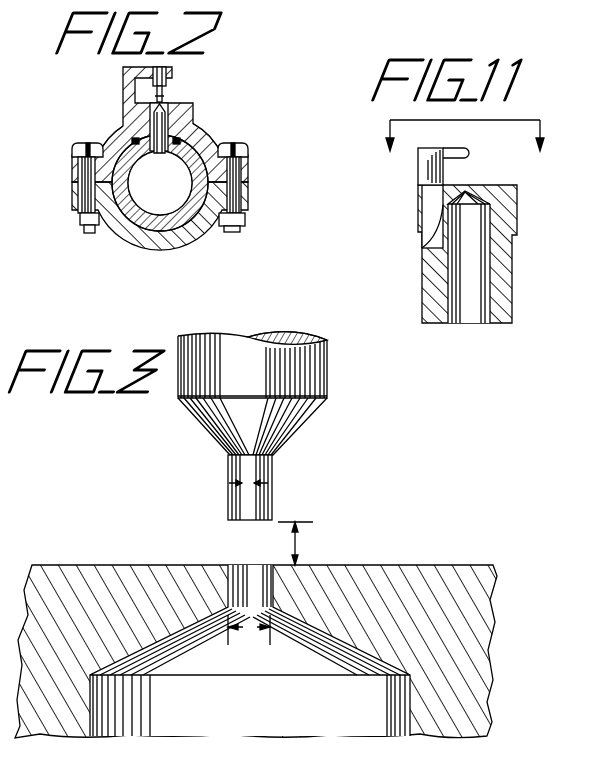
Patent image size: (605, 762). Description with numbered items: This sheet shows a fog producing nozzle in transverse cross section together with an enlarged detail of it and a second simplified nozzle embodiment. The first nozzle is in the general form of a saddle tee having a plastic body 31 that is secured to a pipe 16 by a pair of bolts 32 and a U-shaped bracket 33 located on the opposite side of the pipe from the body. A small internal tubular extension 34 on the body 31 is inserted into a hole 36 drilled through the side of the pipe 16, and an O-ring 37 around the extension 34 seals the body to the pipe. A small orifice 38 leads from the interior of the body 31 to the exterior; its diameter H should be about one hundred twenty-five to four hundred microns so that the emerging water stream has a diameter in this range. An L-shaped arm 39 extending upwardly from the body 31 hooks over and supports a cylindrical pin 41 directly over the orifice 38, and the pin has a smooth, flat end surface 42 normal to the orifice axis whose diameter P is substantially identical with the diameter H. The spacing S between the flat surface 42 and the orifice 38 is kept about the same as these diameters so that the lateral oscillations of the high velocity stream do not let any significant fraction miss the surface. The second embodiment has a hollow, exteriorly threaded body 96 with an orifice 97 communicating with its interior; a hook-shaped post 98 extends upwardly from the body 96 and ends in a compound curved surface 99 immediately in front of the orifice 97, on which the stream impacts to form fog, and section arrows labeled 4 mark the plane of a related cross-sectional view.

In FIG. 2, the pipe 16 is at (131, 243).
In FIG. 2, the plastic body 31 is at (160, 170).
In FIG. 3, the plastic body 31 is at (348, 578).
In FIG. 2, the bolts 32 is at (72, 197).
In FIG. 2, the U-shaped bracket 33 is at (168, 252).
In FIG. 2, the internal tubular extension 34 is at (200, 132).
In FIG. 2, the hole 36 is at (152, 153).
In FIG. 2, the O-ring 37 is at (193, 107).
In FIG. 3, the orifice 38 is at (241, 576).
In FIG. 2, the L-shaped arm 39 is at (123, 77).
In FIG. 2, the cylindrical pin 41 is at (174, 96).
In FIG. 3, the cylindrical pin 41 is at (327, 378).
In FIG. 3, the flat end surface 42 is at (240, 525).
In FIG. 11, the hollow body 96 is at (513, 281).
In FIG. 11, the orifice 97 is at (468, 188).
In FIG. 11, the hook-shaped post 98 is at (418, 178).
In FIG. 11, the compound curved surface 99 is at (478, 160).
In FIG. 11, the section line 4- 4 is at (463, 148).
In FIG. 3, the diameter of end surface P is at (250, 485).
In FIG. 3, the spacing S is at (298, 545).
In FIG. 3, the diameter of orifice H is at (250, 629).